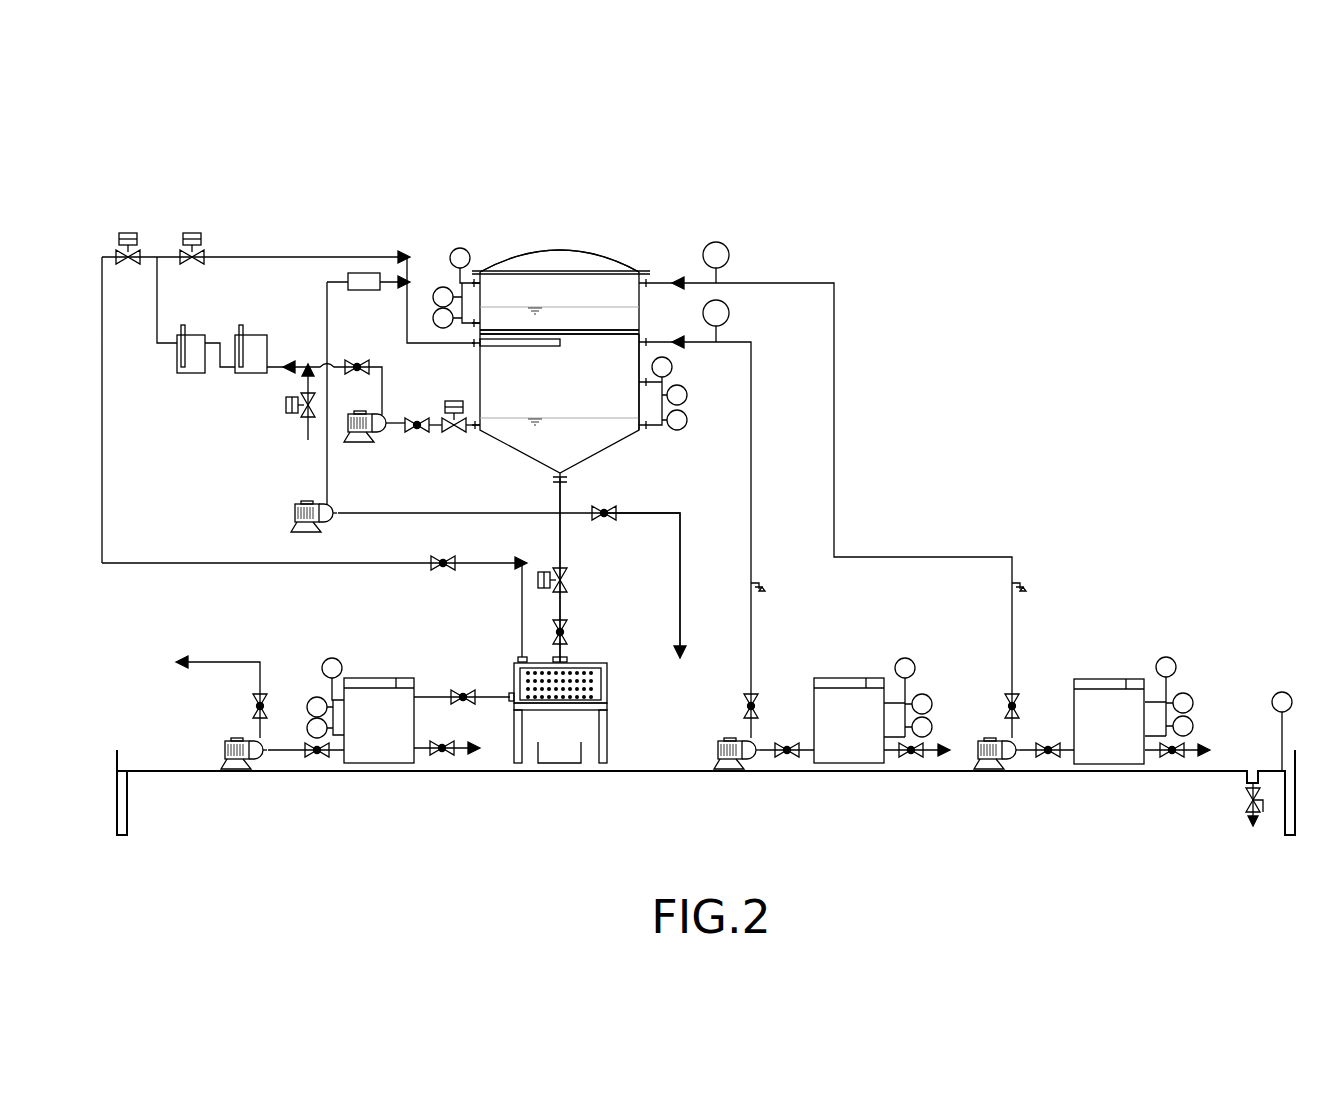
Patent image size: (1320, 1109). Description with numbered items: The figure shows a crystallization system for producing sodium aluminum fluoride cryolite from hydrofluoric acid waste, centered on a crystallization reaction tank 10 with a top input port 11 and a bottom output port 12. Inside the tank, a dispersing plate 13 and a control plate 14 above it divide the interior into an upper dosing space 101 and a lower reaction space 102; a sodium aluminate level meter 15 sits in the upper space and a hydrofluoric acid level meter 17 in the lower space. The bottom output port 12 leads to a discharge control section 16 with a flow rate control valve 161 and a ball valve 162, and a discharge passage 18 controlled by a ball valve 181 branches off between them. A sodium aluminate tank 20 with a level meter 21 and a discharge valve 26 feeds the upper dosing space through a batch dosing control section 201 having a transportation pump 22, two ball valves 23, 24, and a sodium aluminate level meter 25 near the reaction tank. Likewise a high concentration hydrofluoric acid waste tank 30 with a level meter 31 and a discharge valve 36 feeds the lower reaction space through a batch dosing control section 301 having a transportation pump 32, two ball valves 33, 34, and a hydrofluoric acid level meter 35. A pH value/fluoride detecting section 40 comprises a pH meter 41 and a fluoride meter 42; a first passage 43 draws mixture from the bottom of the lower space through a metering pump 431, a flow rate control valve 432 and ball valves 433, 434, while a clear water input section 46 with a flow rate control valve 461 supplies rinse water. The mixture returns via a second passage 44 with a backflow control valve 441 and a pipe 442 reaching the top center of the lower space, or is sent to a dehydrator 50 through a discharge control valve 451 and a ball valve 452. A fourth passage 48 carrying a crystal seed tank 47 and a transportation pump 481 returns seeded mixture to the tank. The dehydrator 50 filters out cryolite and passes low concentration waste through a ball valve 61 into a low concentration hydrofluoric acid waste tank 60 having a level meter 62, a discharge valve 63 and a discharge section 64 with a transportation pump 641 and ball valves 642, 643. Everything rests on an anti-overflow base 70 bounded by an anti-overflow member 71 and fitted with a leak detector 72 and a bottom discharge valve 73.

The crystallization reaction tank 10 is at (600, 244).
The upper dosing space 101 is at (523, 300).
The lower reaction space 102 is at (505, 393).
The top input port 11 is at (553, 270).
The bottom output port 12 is at (568, 477).
The dispersing plate 13 is at (612, 338).
The control plate 14 is at (615, 330).
The sodium aluminate level meter 15 is at (459, 248).
The discharge control section 16 is at (563, 560).
The flow rate control valve 161 is at (546, 575).
The ball valve 162 is at (566, 632).
The hydrofluoric acid level meter 17 is at (672, 367).
The discharge passage 18 is at (684, 575).
The ball valve 181 is at (606, 518).
The sodium aluminate tank 20 is at (1113, 677).
The batch dosing control section 201 is at (840, 483).
The level meter 21 is at (1170, 662).
The transportation pump 22 is at (995, 768).
The ball valve 23 is at (1048, 762).
The ball valve 24 is at (1017, 698).
The sodium aluminate level meter 25 is at (725, 248).
The discharge valve 26 is at (1172, 762).
The high concentration hydrofluoric acid waste tank 30 is at (853, 676).
The batch dosing control section 301 is at (757, 468).
The level meter 31 is at (911, 663).
The transportation pump 32 is at (730, 768).
The ball valve 33 is at (787, 762).
The ball valve 34 is at (756, 698).
The hydrofluoric acid level meter 35 is at (729, 313).
The discharge valve 36 is at (910, 762).
The pH value/fluoride detecting section 40 is at (240, 242).
The pH meter 41 is at (241, 373).
The fluoride meter 42 is at (183, 373).
The first passage 43 is at (293, 365).
The metering pump 431 is at (368, 434).
The flow rate control valve 432 is at (455, 435).
The ball valve 433 is at (417, 435).
The ball valve 434 is at (358, 363).
The second passage 44 is at (295, 256).
The backflow control valve 441 is at (192, 232).
The pipe 442 is at (540, 347).
The discharge control valve 451 is at (128, 232).
The ball valve 452 is at (442, 570).
The clear water input section 46 is at (308, 428).
The flow rate control valve 461 is at (286, 405).
The crystal seed tank 47 is at (360, 272).
The fourth passage 48 is at (423, 518).
The transportation pump 481 is at (295, 513).
The dehydrator 50 is at (555, 762).
The low concentration hydrofluoric acid waste tank 60 is at (380, 676).
The ball valve 61 is at (466, 690).
The level meter 62 is at (330, 658).
The discharge valve 63 is at (447, 745).
The low concentration hydrofluoric acid waste discharge section 64 is at (212, 661).
The transportation pump 641 is at (226, 748).
The ball valve 642 is at (312, 746).
The ball valve 643 is at (255, 706).
The anti-overflow base 70 is at (1238, 775).
The anti-overflow member 71 is at (1296, 758).
The leak detector 72 is at (1274, 695).
The discharge valve 73 is at (1251, 808).